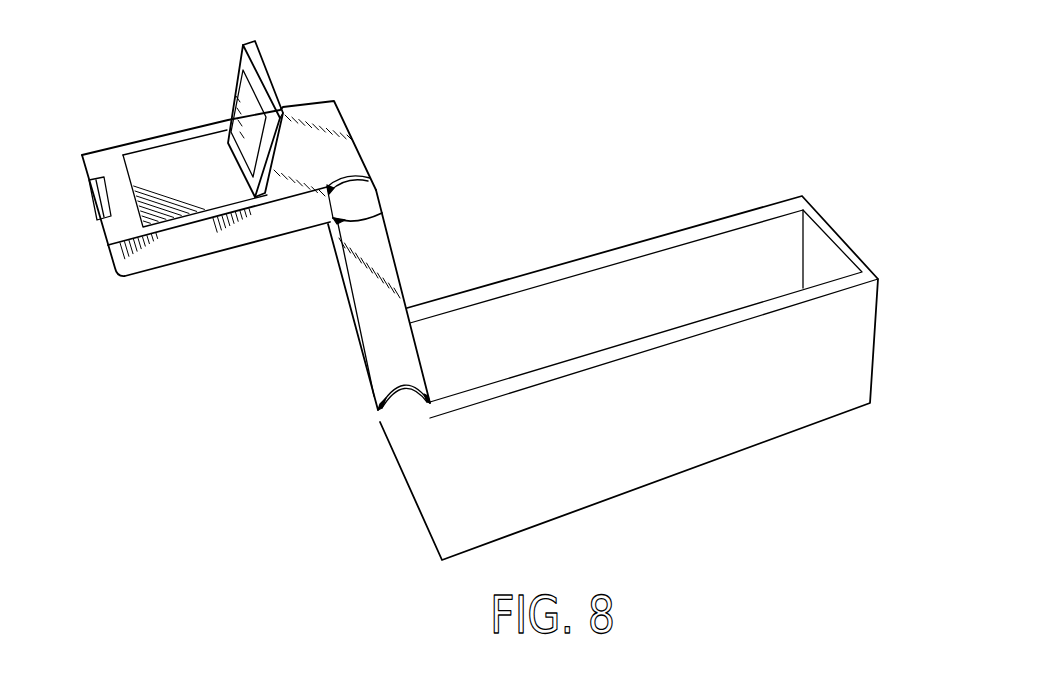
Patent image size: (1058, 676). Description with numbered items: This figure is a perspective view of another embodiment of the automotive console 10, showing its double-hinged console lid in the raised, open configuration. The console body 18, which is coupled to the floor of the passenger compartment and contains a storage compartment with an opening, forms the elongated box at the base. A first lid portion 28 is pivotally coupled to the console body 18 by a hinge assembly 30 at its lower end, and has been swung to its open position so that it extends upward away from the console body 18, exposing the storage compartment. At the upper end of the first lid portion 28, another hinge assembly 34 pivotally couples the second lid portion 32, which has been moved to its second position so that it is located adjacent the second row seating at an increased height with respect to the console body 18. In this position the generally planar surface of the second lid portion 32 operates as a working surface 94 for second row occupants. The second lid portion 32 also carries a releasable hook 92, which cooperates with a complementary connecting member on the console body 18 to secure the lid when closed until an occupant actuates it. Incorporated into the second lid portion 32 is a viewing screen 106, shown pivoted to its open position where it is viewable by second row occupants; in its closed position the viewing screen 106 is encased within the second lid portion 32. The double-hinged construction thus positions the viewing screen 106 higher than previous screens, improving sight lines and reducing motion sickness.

The automotive console 10 is at (780, 474).
The console body 18 is at (866, 340).
The first lid portion 28 is at (370, 252).
The hinge assembly 30 is at (392, 418).
The second lid portion 32 is at (283, 106).
The hinge assembly 34 is at (384, 184).
The releasable hook 92 is at (88, 191).
The working surface 94 is at (345, 162).
The viewing screen 106 is at (233, 89).